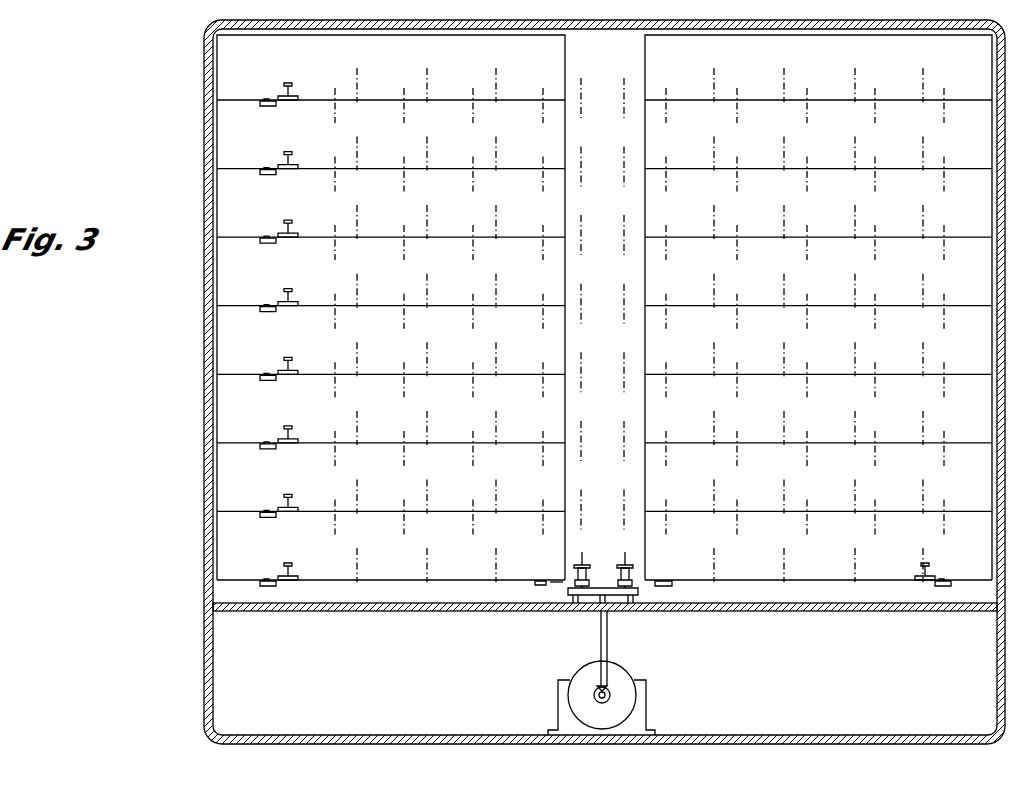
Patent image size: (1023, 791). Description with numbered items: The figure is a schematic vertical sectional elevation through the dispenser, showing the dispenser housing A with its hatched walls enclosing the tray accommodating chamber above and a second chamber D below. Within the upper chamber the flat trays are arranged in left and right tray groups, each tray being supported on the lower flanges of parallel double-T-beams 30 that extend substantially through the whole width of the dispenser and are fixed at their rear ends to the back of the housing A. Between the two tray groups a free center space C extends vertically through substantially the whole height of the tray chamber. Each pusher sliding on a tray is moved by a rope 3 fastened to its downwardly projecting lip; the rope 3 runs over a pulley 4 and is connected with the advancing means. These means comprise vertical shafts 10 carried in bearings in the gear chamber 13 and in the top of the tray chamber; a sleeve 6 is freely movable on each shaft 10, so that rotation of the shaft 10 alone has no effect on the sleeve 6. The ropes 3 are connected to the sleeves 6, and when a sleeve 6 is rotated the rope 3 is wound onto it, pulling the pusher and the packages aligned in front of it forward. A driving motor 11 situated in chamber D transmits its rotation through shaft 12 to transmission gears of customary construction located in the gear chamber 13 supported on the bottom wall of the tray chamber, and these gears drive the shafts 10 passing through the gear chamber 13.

The dispenser housing A is at (205, 420).
The free center space C is at (612, 248).
The second chamber D is at (840, 677).
The double-T-beam 30 is at (497, 222).
The pulley 4 is at (472, 247).
The rope 3 is at (562, 583).
The vertical shaft 10 is at (621, 556).
The sleeve 6 is at (616, 568).
The gear chamber 13 is at (640, 592).
The shaft 12 is at (608, 645).
The driving motor 11 is at (623, 677).